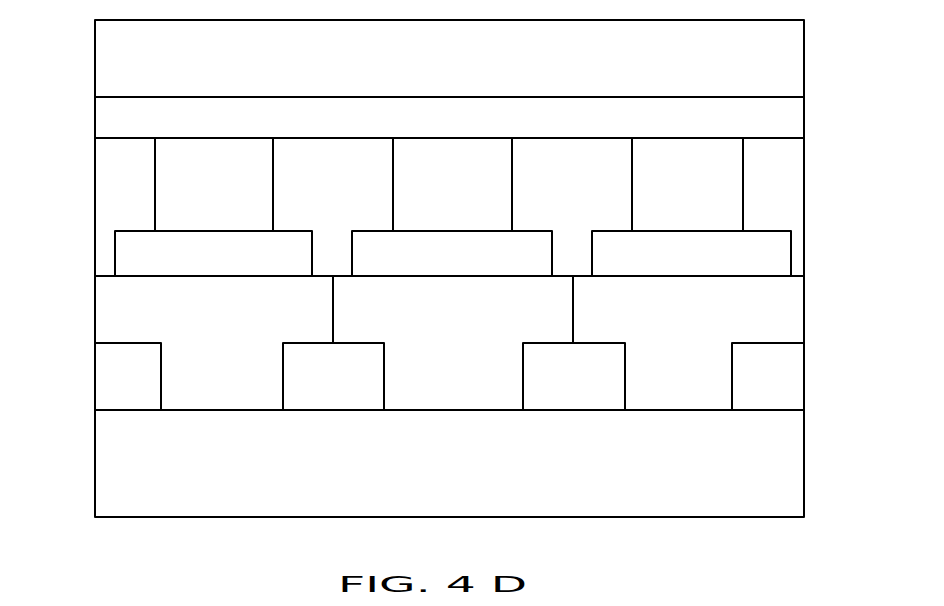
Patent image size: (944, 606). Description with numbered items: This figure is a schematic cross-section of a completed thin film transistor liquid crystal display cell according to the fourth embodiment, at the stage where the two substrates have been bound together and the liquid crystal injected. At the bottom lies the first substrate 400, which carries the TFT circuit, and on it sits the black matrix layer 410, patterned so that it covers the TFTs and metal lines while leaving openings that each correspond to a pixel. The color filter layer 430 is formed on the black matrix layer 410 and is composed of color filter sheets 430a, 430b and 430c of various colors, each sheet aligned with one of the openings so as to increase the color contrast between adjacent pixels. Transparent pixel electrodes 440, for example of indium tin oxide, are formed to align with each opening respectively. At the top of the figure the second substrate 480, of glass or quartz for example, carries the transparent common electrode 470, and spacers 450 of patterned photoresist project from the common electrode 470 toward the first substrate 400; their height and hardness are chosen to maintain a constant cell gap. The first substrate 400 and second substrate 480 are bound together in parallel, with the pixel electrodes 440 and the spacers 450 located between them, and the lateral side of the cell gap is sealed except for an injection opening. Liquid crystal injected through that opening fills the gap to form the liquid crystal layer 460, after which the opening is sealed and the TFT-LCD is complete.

The first substrate 400 is at (682, 484).
The black matrix layer 410 is at (118, 374).
The color filter layer 430 is at (812, 320).
The color filter sheet 430a is at (263, 324).
The color filter sheet 430b is at (488, 324).
The color filter sheet 430c is at (698, 324).
The pixel electrodes 440 is at (118, 254).
The spacers 450 is at (118, 192).
The liquid crystal layer 460 is at (194, 196).
The common electrode 470 is at (785, 119).
The second substrate 480 is at (785, 56).